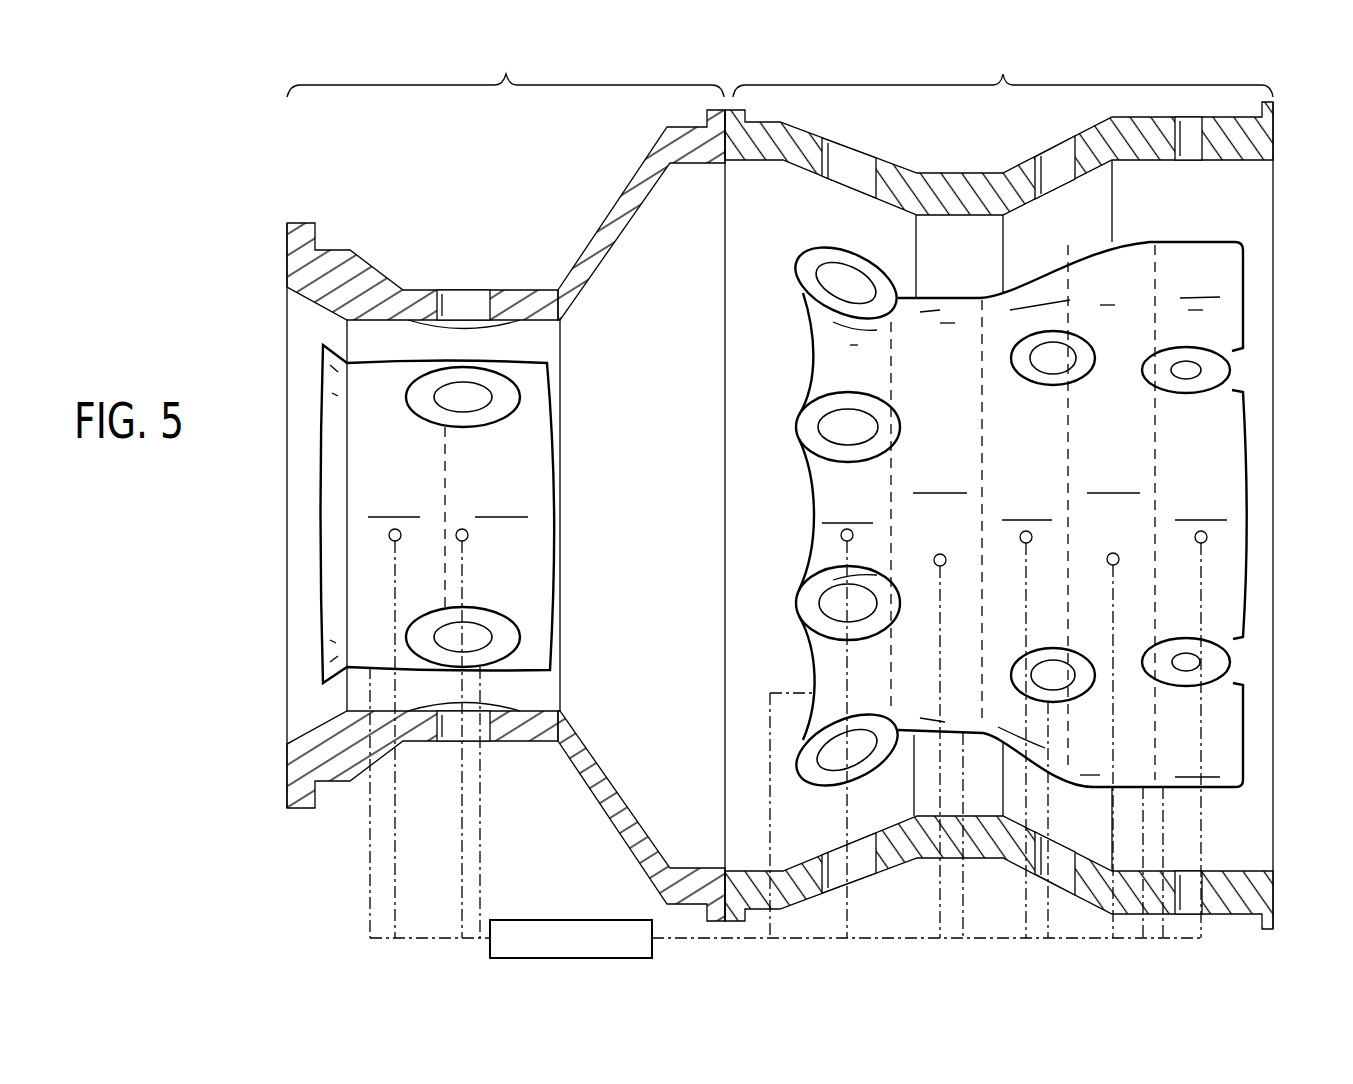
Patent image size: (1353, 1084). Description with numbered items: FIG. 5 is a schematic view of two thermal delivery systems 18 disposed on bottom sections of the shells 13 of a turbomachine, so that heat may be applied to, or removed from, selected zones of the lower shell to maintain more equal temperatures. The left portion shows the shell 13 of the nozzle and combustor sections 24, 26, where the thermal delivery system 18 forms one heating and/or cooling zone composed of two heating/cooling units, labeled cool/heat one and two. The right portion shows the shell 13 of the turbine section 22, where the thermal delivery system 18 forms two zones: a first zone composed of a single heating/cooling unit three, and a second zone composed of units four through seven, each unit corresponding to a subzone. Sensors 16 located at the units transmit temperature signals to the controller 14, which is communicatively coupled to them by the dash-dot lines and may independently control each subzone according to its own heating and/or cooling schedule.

The bottom shell 13 is at (300, 270).
The controller 14 is at (572, 920).
The sensors 16 is at (389, 535).
The thermal delivery systems 18 is at (345, 607).
The turbine section 22 is at (1003, 69).
The fuel nozzles 24 is at (505, 69).
The combustors 26 is at (505, 69).